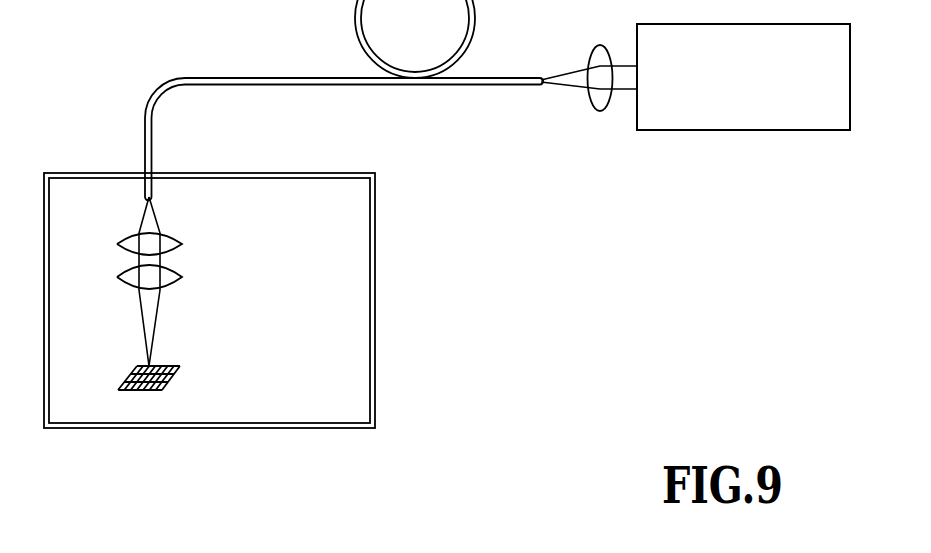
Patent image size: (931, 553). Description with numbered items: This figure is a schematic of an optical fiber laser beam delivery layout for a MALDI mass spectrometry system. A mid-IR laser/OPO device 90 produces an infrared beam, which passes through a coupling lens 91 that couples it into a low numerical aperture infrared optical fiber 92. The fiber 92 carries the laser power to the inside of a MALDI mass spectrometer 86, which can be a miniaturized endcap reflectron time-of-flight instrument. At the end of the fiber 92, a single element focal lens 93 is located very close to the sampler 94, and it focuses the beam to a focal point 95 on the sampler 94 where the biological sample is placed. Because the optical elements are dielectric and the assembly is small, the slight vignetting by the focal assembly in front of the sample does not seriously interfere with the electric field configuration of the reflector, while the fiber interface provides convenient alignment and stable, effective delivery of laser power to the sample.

The MALDI mass spectrometer 86 is at (376, 301).
The mid-IR laser/OPO device 90 is at (742, 132).
The coupling lens 91 is at (595, 112).
The infrared optical fiber 92 is at (371, 86).
The focal lens 93 is at (183, 278).
The sampler 94 is at (182, 362).
The focal point 95 is at (147, 364).